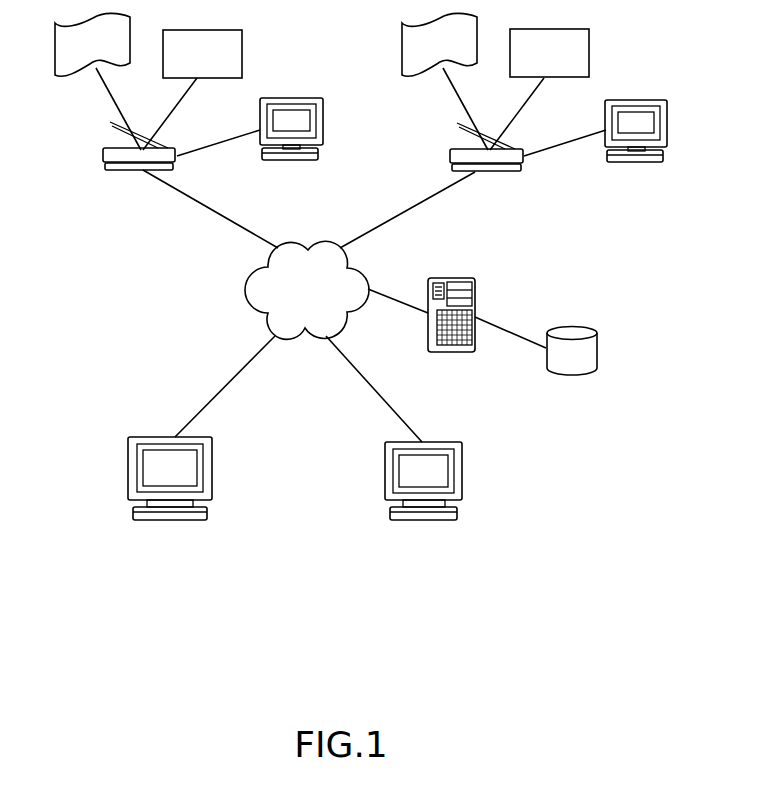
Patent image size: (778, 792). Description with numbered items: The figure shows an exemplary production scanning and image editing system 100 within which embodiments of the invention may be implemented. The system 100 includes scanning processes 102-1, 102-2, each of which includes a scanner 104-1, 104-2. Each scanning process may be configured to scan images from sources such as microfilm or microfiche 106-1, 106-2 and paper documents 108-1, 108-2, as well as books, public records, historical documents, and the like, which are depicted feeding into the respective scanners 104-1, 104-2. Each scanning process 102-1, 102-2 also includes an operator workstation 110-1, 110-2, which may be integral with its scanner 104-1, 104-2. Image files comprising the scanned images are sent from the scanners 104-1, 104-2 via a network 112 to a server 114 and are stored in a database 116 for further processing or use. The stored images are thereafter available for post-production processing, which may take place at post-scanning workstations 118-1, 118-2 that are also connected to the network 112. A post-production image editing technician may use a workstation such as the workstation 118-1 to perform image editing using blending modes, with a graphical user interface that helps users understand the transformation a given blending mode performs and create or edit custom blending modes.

The production scanning and image editing system 100 is at (483, 603).
The scanning process 102-1 is at (175, 142).
The scanning process 102-2 is at (520, 137).
The scanner 104-1 is at (103, 155).
The scanner 104-2 is at (450, 156).
The microfilm or microfiche 106-1 is at (67, 56).
The microfilm or microfiche 106-2 is at (414, 56).
The paper document 108-1 is at (178, 64).
The paper document 108-2 is at (524, 64).
The operator workstation 110-1 is at (290, 98).
The operator workstation 110-2 is at (640, 100).
The network 112 is at (291, 302).
The server 114 is at (453, 278).
The database 116 is at (556, 366).
The post-scanning workstation 118-1 is at (213, 484).
The post-scanning workstation 118-2 is at (463, 482).